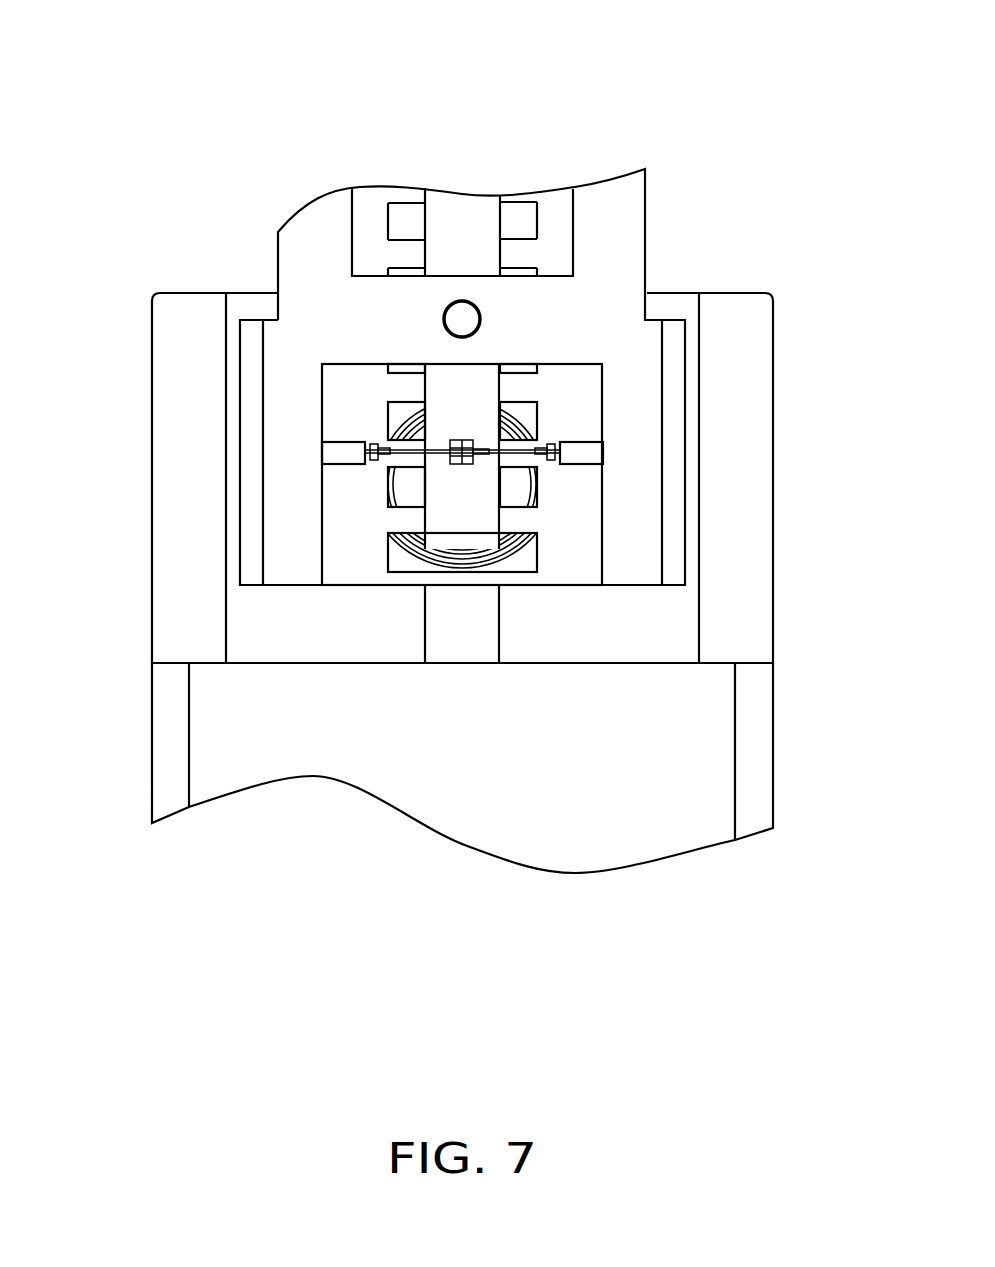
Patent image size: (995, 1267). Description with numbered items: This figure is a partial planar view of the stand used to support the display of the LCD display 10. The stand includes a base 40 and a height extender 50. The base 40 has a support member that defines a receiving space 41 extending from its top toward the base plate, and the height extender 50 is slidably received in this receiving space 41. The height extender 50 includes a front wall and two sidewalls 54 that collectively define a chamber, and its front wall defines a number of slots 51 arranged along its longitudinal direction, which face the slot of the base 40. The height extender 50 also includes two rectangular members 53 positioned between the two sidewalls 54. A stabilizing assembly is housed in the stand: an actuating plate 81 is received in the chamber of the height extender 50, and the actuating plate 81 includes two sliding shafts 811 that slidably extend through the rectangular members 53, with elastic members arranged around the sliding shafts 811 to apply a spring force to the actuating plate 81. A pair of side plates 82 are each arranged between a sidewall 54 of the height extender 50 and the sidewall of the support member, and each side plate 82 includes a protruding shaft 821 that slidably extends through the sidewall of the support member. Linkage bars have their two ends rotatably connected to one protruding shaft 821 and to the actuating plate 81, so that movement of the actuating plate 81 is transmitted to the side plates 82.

The LCD display 10 is at (245, 60).
The base 40 is at (695, 735).
The receiving space 41 is at (645, 627).
The height extender 50 is at (622, 216).
The slots 51 is at (525, 222).
The rectangular members 53 is at (370, 297).
The sidewalls 54 is at (620, 542).
The actuating plate 81 is at (458, 195).
The sliding shafts 811 is at (463, 312).
The side plates 82 is at (672, 363).
The protruding shaft 821 is at (588, 447).